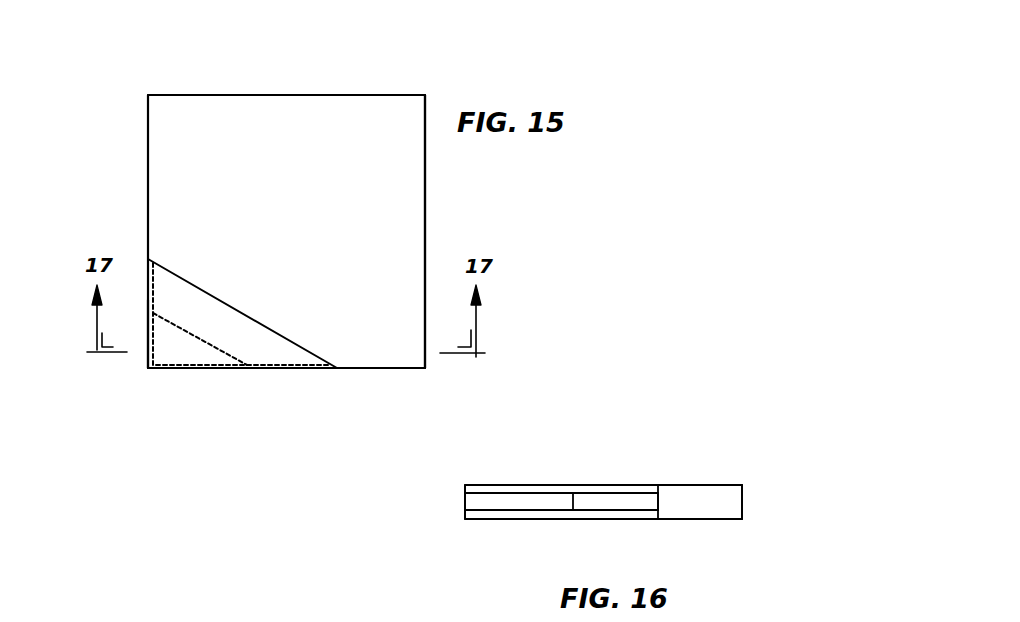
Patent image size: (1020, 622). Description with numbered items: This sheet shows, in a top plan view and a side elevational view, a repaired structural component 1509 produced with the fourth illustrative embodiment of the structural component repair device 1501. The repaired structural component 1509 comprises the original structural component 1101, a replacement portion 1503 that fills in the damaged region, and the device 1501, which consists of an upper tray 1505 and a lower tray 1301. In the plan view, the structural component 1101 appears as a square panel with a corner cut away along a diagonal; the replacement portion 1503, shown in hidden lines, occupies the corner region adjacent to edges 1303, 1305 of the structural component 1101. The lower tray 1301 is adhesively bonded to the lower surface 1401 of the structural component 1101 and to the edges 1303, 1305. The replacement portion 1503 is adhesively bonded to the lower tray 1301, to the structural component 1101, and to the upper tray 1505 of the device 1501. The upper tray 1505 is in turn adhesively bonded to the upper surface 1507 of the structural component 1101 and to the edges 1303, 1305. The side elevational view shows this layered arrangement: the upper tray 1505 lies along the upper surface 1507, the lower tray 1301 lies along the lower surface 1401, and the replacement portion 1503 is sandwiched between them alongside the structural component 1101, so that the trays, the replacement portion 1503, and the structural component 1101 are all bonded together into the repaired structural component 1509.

In FIG. 15, the repaired structural component 1509 is at (276, 84).
In FIG. 16, the repaired structural component 1509 is at (681, 426).
In FIG. 15, the structural component 1101 is at (403, 108).
In FIG. 16, the structural component 1101 is at (720, 513).
In FIG. 15, the upper surface 1507 is at (385, 201).
In FIG. 16, the upper surface 1507 is at (665, 485).
In FIG. 15, the edge 1303 is at (148, 262).
In FIG. 15, the upper tray 1505 is at (220, 320).
In FIG. 16, the upper tray 1505 is at (488, 488).
In FIG. 15, the edge 1305 is at (307, 368).
In FIG. 16, the edge 1305 is at (715, 500).
In FIG. 15, the structural component repair device 1501 is at (173, 378).
In FIG. 16, the structural component repair device 1501 is at (464, 528).
In FIG. 15, the replacement portion 1503 is at (183, 348).
In FIG. 16, the replacement portion 1503 is at (483, 503).
In FIG. 16, the lower tray 1301 is at (512, 517).
In FIG. 16, the lower surface 1401 is at (690, 520).